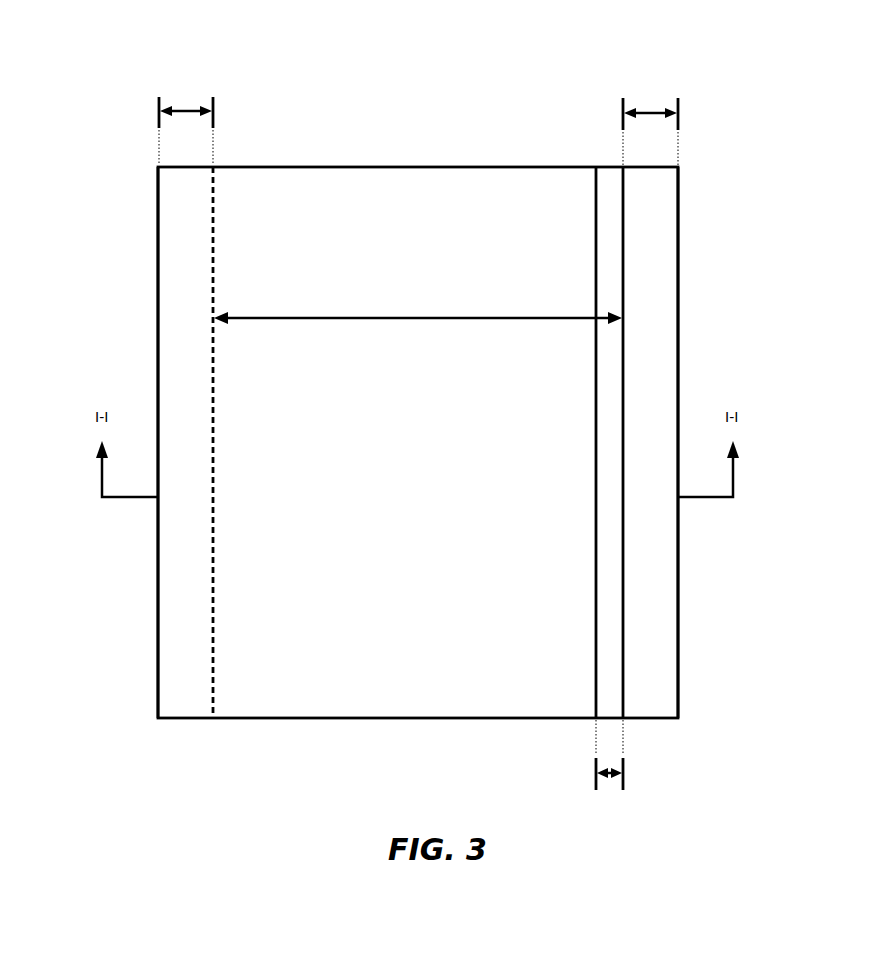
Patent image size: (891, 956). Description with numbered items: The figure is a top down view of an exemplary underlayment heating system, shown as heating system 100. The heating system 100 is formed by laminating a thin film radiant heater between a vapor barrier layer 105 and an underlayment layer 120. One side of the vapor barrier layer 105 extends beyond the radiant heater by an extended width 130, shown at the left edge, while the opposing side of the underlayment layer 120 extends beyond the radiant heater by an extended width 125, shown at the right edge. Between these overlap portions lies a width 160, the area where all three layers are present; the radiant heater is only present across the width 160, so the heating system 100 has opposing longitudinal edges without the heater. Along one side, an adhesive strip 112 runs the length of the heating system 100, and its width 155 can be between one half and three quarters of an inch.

The heating system 100 is at (768, 331).
The vapor barrier layer 105 is at (157, 232).
The adhesive strip 112 is at (610, 499).
The underlayment layer 120 is at (679, 222).
The extended width 125 is at (650, 112).
The extended width 130 is at (185, 108).
The width of the adhesive strip 155 is at (610, 776).
The width 160 is at (445, 317).